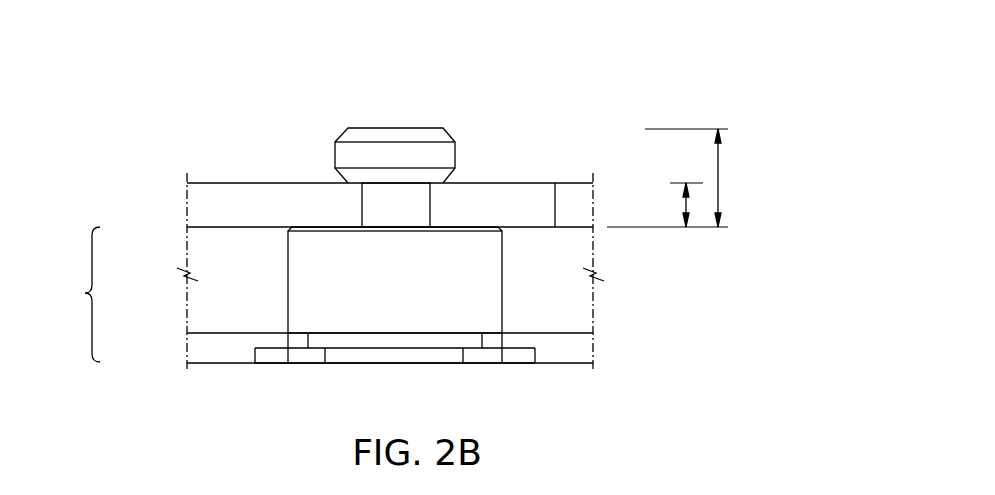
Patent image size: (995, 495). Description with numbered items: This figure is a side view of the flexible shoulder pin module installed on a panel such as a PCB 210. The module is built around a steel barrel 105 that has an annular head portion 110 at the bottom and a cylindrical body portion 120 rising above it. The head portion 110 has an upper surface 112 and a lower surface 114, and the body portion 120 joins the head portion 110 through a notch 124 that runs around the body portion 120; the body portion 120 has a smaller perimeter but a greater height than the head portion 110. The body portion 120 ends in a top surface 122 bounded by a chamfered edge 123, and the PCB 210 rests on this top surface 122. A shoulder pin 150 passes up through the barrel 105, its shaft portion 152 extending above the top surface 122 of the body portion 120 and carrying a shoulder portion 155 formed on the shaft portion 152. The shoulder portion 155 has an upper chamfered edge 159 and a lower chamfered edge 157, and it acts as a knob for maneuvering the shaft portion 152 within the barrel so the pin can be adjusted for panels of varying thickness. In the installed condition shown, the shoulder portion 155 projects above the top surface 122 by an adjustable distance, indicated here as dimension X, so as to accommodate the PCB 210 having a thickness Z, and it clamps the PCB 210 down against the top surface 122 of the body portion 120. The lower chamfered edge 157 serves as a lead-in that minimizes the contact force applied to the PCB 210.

The barrel 105 is at (70, 294).
The head portion 110 is at (246, 352).
The upper surface 112 is at (523, 347).
The lower surface 114 is at (522, 365).
The body portion 120 is at (276, 262).
The top surface 122 is at (313, 225).
The chamfered edge 123 is at (503, 229).
The notch 124 is at (307, 336).
The shoulder pin 150 is at (450, 130).
The shaft portion 152 is at (376, 217).
The shoulder portion 155 is at (373, 153).
The lower chamfered edge 157 is at (452, 179).
The upper chamfered edge 159 is at (453, 140).
The PCB 210 is at (235, 200).
The height dimension X is at (722, 178).
The thickness Z is at (683, 206).